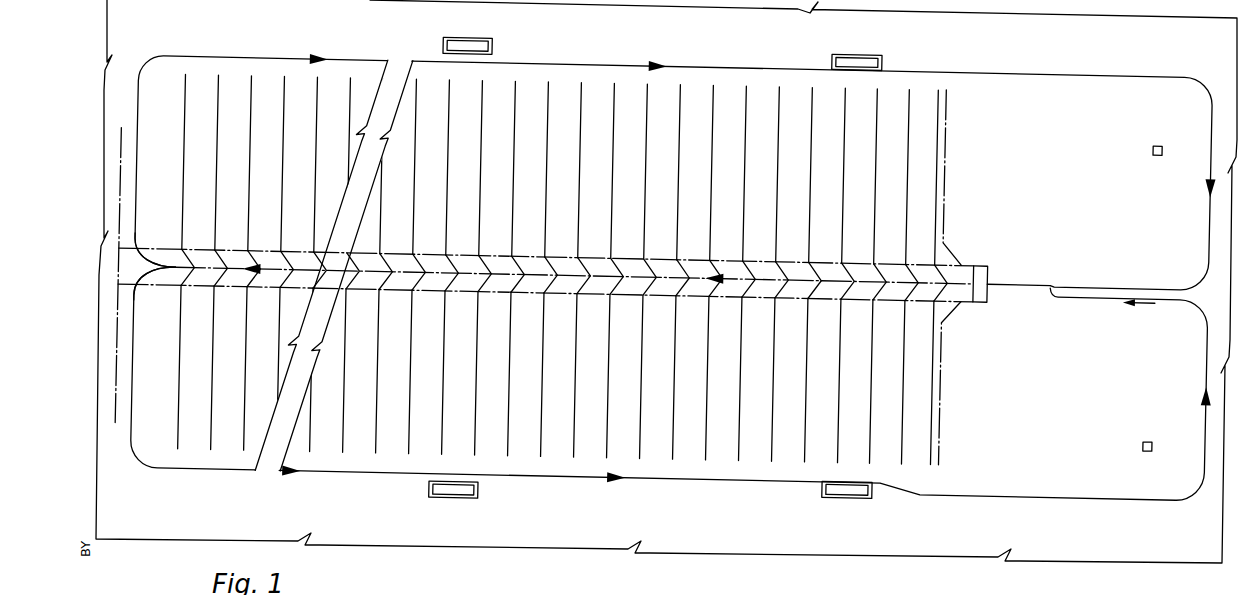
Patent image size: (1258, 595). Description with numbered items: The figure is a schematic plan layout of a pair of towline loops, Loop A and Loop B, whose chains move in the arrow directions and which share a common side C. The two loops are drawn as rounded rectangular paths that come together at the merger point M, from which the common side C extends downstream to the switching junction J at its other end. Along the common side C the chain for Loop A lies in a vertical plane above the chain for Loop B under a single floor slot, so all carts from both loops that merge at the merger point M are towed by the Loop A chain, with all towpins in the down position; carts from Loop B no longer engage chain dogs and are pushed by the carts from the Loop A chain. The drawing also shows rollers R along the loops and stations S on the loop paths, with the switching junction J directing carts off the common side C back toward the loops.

The Loop A is at (766, 58).
The Loop B is at (685, 484).
The common side C is at (966, 286).
The rollers R is at (280, 188).
The stations S is at (884, 60).
The switching junction J is at (92, 197).
The merger point M is at (1051, 279).